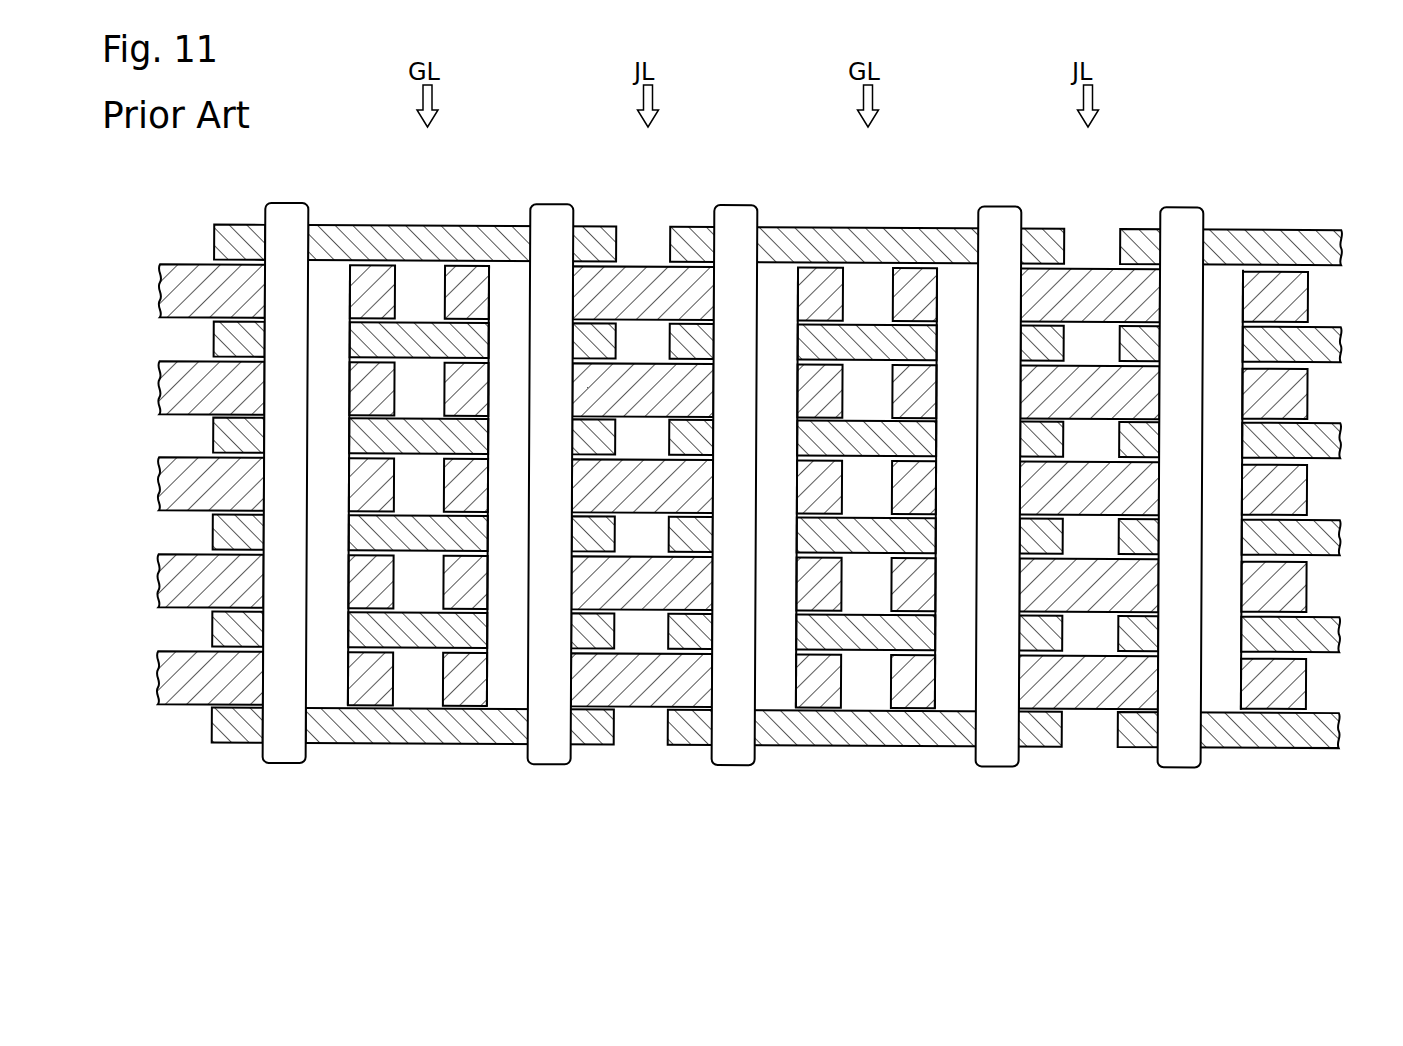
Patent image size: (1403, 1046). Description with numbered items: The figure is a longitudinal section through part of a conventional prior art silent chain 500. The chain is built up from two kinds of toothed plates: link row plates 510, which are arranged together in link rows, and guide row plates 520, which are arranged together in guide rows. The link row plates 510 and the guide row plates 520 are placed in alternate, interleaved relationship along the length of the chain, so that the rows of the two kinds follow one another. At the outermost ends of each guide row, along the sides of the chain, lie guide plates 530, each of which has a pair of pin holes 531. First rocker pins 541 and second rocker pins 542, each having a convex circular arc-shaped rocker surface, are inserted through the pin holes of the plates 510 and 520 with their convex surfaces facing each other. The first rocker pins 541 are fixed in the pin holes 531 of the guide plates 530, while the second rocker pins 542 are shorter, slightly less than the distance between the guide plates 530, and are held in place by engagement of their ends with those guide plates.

The silent chain 500 is at (1319, 137).
The link row plate 510 is at (195, 272).
The guide row plate 520 is at (417, 337).
The guide plate 530 is at (360, 243).
The pin hole 531 is at (306, 248).
The first rocker pin 541 is at (283, 745).
The second rocker pin 542 is at (320, 690).